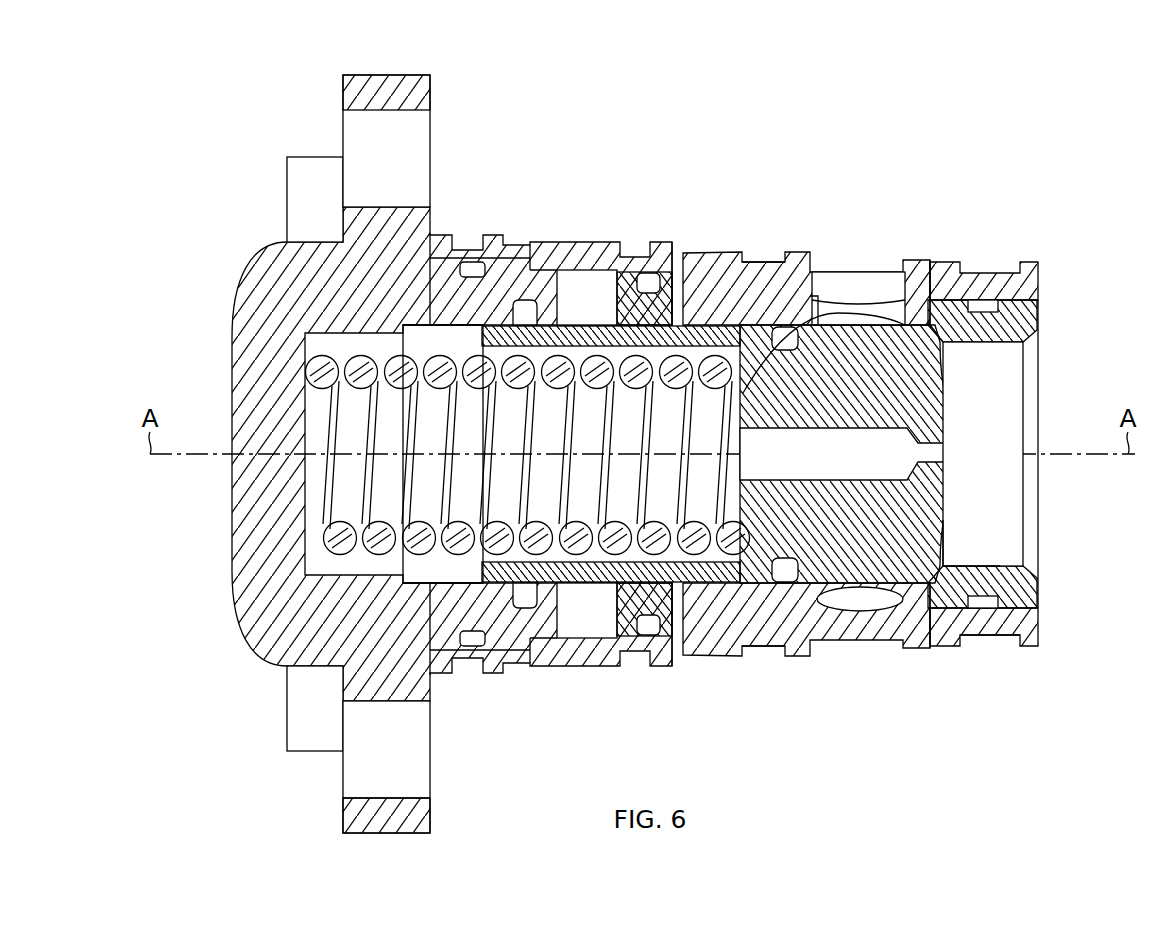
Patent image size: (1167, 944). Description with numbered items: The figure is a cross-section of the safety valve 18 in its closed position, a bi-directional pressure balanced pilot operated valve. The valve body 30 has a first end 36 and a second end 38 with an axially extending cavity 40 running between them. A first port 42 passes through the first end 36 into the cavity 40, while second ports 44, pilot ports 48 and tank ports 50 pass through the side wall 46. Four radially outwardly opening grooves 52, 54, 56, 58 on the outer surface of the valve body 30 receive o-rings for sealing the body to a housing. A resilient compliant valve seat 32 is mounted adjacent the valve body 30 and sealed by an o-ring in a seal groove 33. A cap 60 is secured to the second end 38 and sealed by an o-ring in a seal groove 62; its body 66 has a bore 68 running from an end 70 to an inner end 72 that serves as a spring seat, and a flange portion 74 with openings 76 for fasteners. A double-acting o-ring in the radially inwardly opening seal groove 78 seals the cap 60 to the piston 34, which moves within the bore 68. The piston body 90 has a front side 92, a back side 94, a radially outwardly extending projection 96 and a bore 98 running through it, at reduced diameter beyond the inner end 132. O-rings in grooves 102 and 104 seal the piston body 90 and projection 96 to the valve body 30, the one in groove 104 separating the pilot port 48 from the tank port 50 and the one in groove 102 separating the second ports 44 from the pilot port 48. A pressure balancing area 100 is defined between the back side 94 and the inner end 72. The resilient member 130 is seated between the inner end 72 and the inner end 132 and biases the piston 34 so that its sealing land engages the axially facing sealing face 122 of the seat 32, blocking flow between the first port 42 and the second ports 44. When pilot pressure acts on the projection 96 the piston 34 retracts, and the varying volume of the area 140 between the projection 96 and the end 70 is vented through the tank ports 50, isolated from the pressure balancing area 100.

The safety valve 18 is at (1082, 144).
The valve body 30 is at (722, 656).
The resilient compliant valve seat 32 is at (1032, 322).
The seal groove 33 is at (983, 640).
The piston 34 is at (905, 345).
The first end 36 is at (1042, 272).
The second end 38 is at (445, 300).
The axially extending cavity 40 is at (963, 393).
The first port 42 is at (1035, 490).
The second port 44 is at (868, 288).
The side wall 46 is at (605, 243).
The pilot port 48 is at (674, 275).
The tank port 50 is at (528, 262).
The radially outwardly opening groove 52 is at (1003, 270).
The radially outwardly opening groove 54 is at (748, 262).
The radially outwardly opening groove 56 is at (648, 273).
The radially outwardly opening groove 58 is at (445, 240).
The cap 60 is at (270, 268).
The radially outwardly opening seal groove 62 is at (477, 658).
The body 66 is at (525, 300).
The bore 68 is at (450, 583).
The end 70 is at (583, 270).
The inner end 72 is at (318, 337).
The flange portion 74 is at (343, 820).
The openings 76 is at (415, 770).
The radially inwardly opening seal groove 78 is at (524, 608).
The piston body 90 is at (752, 335).
The front side 92 is at (943, 551).
The back side 94 is at (468, 262).
The projection 96 is at (648, 635).
The bore 98 is at (950, 452).
The pressure balancing area 100 is at (417, 565).
The radially outwardly opening groove 102 is at (815, 640).
The radially outwardly opening groove 104 is at (650, 636).
The axially facing sealing face 122 is at (910, 640).
The resilient member 130 is at (318, 545).
The inner end 132 is at (838, 313).
The area 140 is at (588, 638).